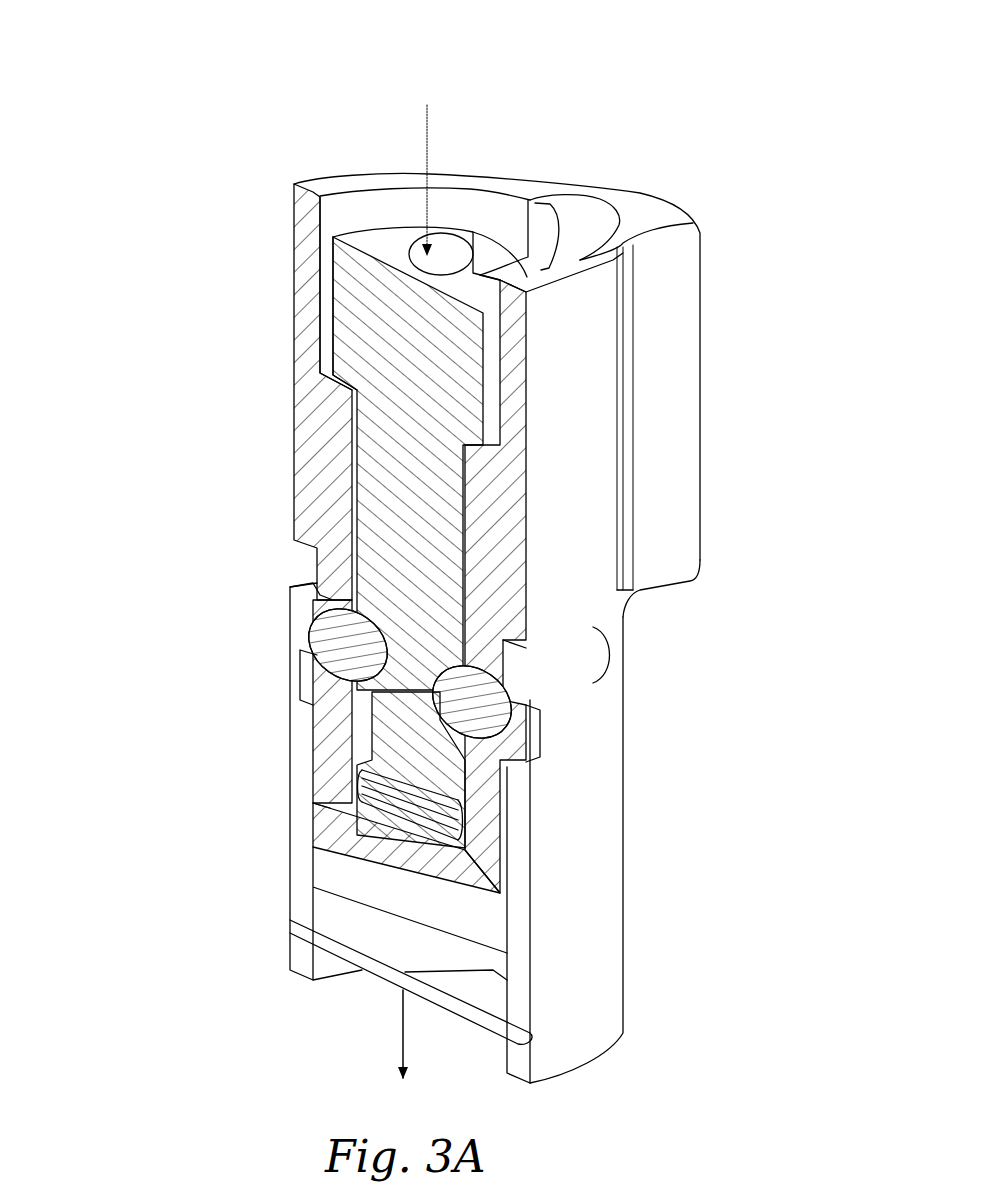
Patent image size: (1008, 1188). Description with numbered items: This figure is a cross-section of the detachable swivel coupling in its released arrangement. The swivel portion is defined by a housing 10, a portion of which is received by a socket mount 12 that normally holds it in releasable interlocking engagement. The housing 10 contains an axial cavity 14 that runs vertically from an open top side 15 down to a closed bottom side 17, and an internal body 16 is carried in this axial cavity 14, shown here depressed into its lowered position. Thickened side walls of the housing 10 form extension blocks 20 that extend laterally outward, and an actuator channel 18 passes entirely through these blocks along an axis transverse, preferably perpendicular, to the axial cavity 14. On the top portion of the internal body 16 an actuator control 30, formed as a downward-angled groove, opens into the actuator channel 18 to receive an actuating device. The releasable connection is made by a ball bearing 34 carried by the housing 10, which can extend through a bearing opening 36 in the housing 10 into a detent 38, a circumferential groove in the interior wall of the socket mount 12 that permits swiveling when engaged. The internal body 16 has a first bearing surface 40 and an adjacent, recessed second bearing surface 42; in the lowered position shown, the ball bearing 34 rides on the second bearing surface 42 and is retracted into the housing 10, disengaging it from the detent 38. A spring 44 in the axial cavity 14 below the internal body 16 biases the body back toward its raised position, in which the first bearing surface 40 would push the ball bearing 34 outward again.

The housing 10 is at (595, 422).
The socket mount 12 is at (590, 903).
The axial cavity 14 is at (346, 212).
The open top side 15 is at (465, 188).
The internal body 16 is at (367, 302).
The closed bottom side 17 is at (393, 838).
The actuator channel 18 is at (574, 238).
The extension blocks 20 is at (675, 323).
The actuator control 30 is at (467, 257).
The ball bearing 34 is at (340, 632).
The bearing opening 36 is at (322, 607).
The detent 38 is at (310, 672).
The first bearing surface 40 is at (447, 763).
The second bearing surface 42 is at (440, 657).
The spring 44 is at (372, 790).